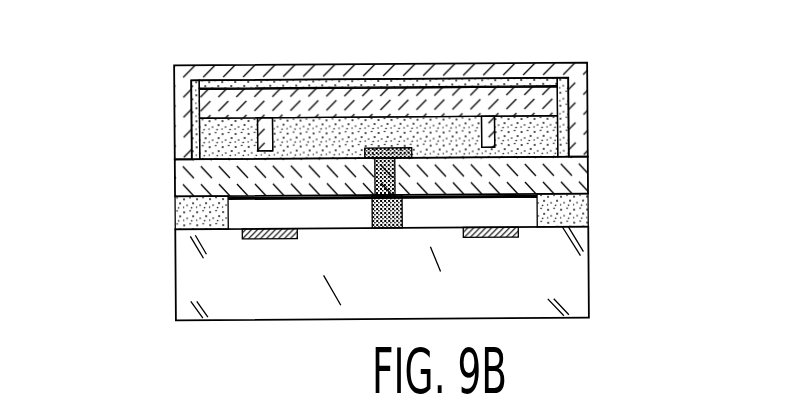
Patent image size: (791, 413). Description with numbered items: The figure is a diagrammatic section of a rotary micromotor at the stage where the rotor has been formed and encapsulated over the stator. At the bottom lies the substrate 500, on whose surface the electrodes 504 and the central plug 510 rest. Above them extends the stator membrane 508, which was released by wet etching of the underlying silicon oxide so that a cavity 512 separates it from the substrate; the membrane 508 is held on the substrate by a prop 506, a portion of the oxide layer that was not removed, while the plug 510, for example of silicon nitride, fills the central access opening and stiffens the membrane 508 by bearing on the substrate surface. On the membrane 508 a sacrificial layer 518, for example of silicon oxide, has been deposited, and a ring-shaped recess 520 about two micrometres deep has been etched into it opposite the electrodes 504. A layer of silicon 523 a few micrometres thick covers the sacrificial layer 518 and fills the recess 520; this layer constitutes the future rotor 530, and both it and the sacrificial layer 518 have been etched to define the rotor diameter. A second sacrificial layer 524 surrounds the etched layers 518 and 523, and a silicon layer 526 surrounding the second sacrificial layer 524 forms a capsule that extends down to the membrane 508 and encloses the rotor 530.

The substrate 500 is at (185, 293).
The electrodes 504 is at (288, 240).
The prop 506 is at (575, 215).
The membrane 508 is at (207, 180).
The plug 510 is at (397, 230).
The cavity 512 is at (457, 210).
The sacrificial layer 518 is at (535, 138).
The recess 520 is at (205, 146).
The layer of silicon 523 is at (540, 97).
The second sacrificial layer 524 is at (197, 118).
The layer of silicon 526 is at (555, 63).
The rotor 530 is at (245, 85).